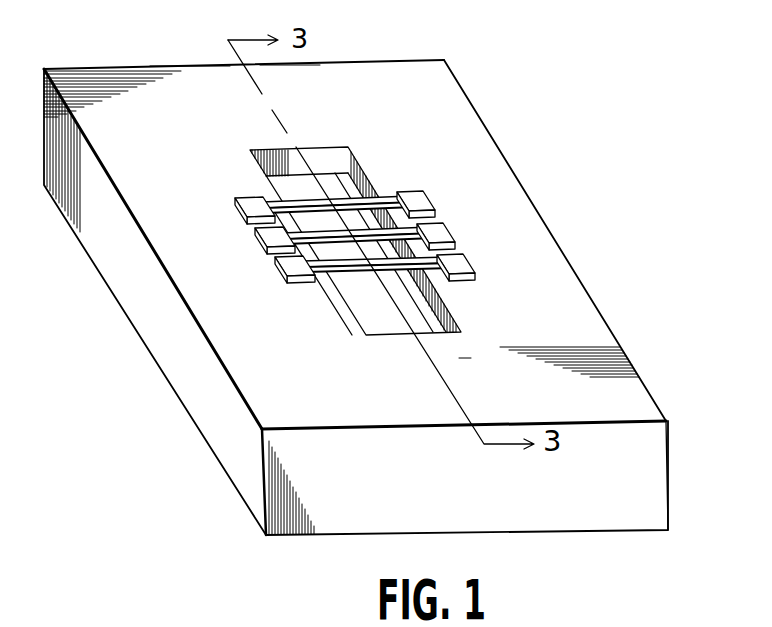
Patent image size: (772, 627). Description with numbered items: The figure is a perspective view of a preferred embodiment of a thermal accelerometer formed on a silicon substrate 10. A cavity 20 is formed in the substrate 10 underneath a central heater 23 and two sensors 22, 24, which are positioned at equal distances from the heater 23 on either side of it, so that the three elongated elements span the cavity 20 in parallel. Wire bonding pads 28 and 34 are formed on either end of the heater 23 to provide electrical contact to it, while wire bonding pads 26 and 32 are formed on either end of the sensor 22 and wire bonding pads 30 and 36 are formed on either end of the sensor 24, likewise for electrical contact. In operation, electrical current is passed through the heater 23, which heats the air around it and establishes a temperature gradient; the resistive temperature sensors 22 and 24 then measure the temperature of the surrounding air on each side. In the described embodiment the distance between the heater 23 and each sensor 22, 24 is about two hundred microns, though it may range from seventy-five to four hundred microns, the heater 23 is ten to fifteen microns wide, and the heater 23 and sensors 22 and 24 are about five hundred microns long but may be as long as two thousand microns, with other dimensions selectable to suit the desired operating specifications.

The silicon substrate 10 is at (471, 100).
The cavity 20 is at (291, 166).
The sensor 22 is at (341, 206).
The central heater 23 is at (355, 240).
The sensor 24 is at (373, 278).
The wire bonding pad 26 is at (421, 201).
The wire bonding pad 28 is at (437, 237).
The wire bonding pad 30 is at (457, 270).
The wire bonding pad 32 is at (250, 207).
The wire bonding pad 34 is at (272, 238).
The wire bonding pad 36 is at (290, 267).